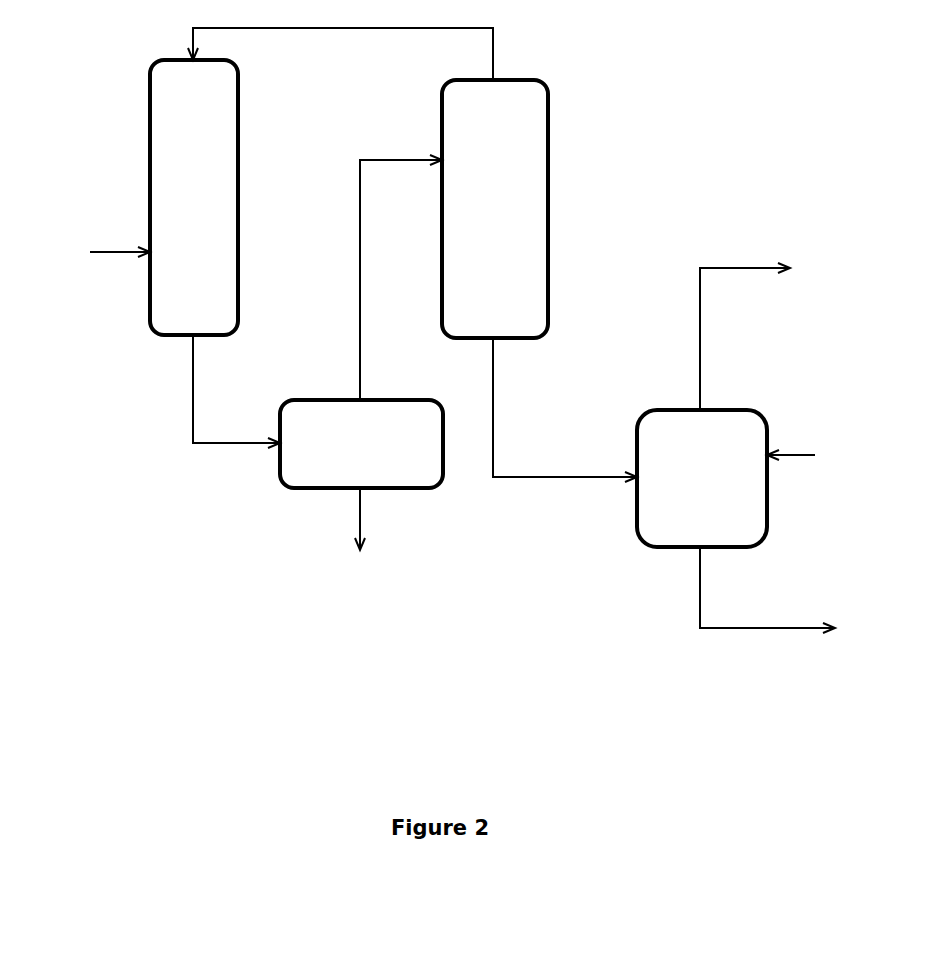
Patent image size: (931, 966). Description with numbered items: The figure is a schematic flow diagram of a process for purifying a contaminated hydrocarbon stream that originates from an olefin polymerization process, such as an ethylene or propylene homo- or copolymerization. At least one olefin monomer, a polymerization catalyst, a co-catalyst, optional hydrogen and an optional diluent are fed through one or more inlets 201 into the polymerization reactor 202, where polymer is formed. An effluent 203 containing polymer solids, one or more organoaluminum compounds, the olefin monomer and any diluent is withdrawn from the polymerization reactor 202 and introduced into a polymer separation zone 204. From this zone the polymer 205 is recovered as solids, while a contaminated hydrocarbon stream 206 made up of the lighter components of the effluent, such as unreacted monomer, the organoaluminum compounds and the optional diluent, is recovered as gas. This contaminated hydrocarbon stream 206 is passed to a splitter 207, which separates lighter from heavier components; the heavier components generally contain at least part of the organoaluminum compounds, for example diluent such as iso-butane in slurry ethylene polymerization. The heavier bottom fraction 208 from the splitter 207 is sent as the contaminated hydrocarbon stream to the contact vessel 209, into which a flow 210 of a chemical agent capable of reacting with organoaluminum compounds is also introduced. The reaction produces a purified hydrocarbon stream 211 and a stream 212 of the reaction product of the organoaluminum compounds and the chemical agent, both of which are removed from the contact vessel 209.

The inlet 201 is at (110, 248).
The polymerization reactor 202 is at (194, 197).
The effluent 203 is at (193, 407).
The polymer separation zone 204 is at (361, 444).
The polymer 205 is at (363, 543).
The contaminated hydrocarbon stream 206 is at (360, 320).
The splitter 207 is at (495, 209).
The bottom fraction 208 is at (365, 33).
The contact vessel 209 is at (702, 478).
The flow of chemical agent 210 is at (792, 455).
The purified hydrocarbon stream 211 is at (728, 267).
The stream of reaction product 212 is at (798, 633).